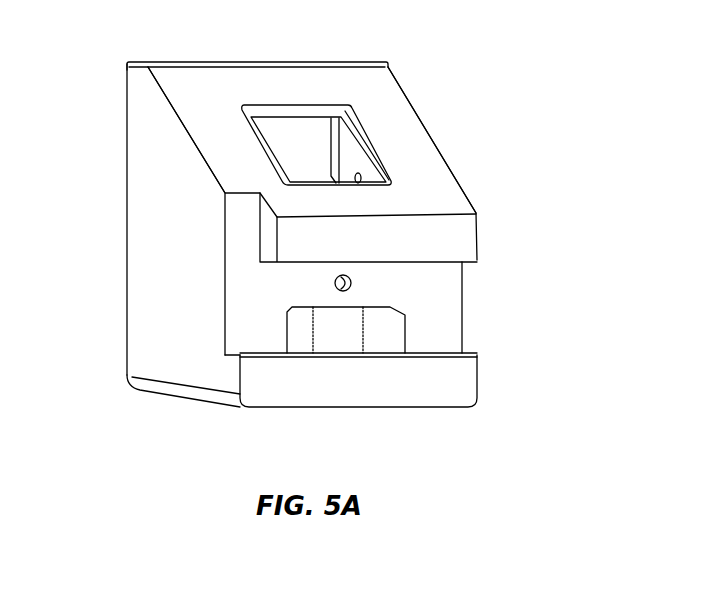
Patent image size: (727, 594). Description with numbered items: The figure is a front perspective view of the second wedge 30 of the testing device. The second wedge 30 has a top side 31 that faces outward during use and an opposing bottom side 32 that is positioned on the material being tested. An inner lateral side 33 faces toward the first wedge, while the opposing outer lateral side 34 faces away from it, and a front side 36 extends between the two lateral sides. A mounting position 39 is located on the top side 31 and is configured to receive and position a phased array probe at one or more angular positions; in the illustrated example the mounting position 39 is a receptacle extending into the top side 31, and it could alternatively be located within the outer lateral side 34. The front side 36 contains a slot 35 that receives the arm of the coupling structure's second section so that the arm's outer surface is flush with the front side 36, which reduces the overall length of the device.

The second wedge 30 is at (586, 88).
The top side 31 is at (200, 110).
The bottom side 32 is at (168, 391).
The inner lateral side 33 is at (160, 212).
The outer lateral side 34 is at (453, 172).
The slot 35 is at (449, 320).
The front side 36 is at (455, 385).
The mounting position 39 is at (302, 140).